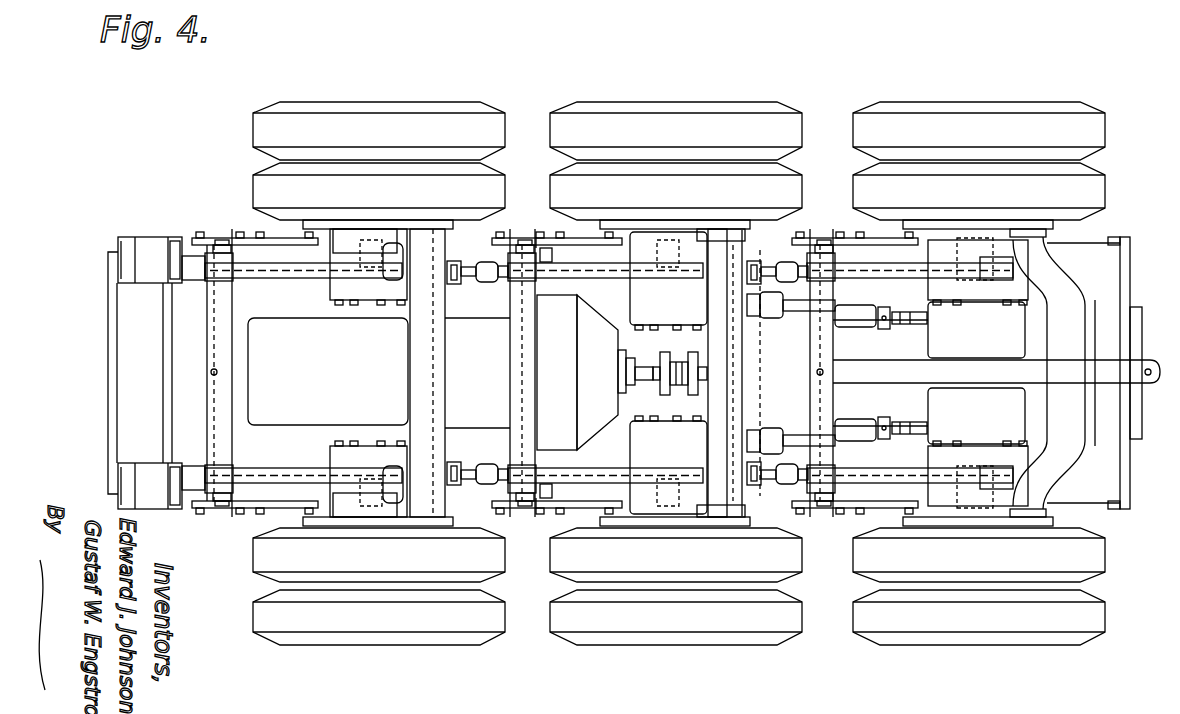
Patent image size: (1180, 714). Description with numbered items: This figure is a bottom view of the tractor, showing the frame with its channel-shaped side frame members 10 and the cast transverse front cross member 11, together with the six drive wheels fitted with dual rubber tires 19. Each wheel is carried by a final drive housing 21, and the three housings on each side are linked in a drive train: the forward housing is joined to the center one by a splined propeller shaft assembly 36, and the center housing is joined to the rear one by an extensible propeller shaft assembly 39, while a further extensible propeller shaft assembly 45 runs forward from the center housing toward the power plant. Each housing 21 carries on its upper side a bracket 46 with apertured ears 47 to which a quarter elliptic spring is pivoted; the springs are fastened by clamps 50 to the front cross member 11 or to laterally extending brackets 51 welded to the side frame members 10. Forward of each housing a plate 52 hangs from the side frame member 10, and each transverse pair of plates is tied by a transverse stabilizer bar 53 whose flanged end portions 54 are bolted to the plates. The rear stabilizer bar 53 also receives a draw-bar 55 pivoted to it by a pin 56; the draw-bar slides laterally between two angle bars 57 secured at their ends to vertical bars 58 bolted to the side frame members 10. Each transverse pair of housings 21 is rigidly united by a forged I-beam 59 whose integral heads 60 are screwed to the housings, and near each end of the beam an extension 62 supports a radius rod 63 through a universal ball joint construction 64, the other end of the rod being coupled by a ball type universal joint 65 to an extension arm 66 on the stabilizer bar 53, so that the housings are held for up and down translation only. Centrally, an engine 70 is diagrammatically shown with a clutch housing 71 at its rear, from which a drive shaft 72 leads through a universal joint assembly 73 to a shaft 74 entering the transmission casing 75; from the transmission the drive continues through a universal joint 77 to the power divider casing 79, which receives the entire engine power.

The side frame member 10 is at (1100, 262).
The transverse front cross member 11 is at (108, 365).
The dual rubber tires 19 is at (440, 128).
The final drive housing 21 is at (340, 240).
The splined propeller shaft assembly 36 is at (600, 508).
The extensible propeller shaft assembly 39 is at (890, 508).
The extensible propeller shaft assembly 45 is at (850, 430).
The bracket 46 is at (680, 240).
The apertured ears 47 is at (546, 248).
The clamps 50 is at (125, 237).
The laterally extending bracket 51 is at (460, 240).
The plate 52 is at (230, 238).
The transverse stabilizer bar 53 is at (214, 400).
The flanged end portions 54 is at (195, 238).
The draw-bar 55 is at (975, 372).
The pin 56 is at (816, 370).
The angle bars 57 is at (1130, 460).
The vertical bars 58 is at (1118, 240).
The I-beam 59 is at (420, 385).
The head 60 is at (1050, 240).
The extension 62 is at (990, 262).
The radius rod 63 is at (310, 278).
The universal ball joint construction 64 is at (395, 300).
The ball type universal joint 65 is at (225, 283).
The extension arm 66 is at (487, 260).
The engine 70 is at (328, 371).
The clutch housing 71 is at (590, 325).
The drive shaft 72 is at (642, 381).
The universal joint assembly 73 is at (680, 362).
The shaft 74 is at (690, 392).
The transmission casing 75 is at (765, 440).
The universal joint 77 is at (755, 400).
The power divider casing 79 is at (927, 400).